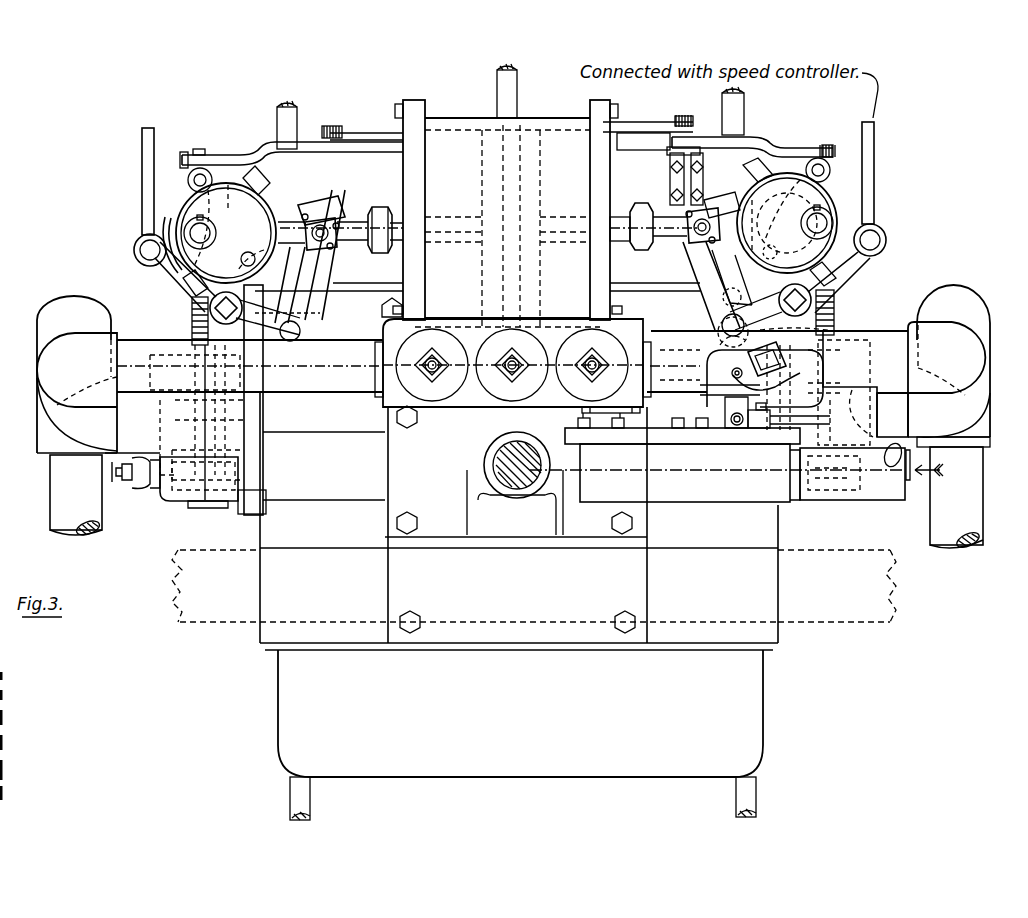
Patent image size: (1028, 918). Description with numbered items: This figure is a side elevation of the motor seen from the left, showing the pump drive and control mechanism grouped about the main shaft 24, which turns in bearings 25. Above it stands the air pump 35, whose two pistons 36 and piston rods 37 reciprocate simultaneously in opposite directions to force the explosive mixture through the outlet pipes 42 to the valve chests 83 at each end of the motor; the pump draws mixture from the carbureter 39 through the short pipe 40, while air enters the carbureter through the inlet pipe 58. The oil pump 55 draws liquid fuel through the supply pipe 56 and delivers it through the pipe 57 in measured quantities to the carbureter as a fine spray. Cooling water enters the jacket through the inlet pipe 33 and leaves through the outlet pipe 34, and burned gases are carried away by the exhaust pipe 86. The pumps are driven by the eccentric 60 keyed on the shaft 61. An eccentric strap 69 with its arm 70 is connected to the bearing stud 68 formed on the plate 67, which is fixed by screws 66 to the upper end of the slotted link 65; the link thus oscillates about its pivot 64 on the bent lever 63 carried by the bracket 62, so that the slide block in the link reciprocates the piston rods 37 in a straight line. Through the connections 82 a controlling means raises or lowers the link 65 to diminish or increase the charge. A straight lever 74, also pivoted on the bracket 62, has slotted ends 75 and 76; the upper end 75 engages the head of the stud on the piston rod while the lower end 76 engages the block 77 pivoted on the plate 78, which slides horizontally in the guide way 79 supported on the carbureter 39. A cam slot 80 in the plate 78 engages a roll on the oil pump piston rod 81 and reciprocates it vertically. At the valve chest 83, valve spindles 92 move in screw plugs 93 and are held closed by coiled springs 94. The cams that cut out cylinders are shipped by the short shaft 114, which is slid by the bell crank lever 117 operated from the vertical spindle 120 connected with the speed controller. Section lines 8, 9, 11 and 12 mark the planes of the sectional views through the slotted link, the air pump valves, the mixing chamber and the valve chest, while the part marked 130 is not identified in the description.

The section line 8 is at (531, 230).
The section line 9 is at (383, 366).
The section line 11 is at (808, 504).
The section line 12 is at (206, 518).
The main shaft 24 is at (500, 452).
The bearings 25 is at (482, 470).
The inlet pipe 33 is at (300, 803).
The outlet pipe 34 is at (293, 118).
The air pump 35 is at (546, 118).
The pistons 36 is at (484, 166).
The piston rods 37 is at (462, 240).
The carbureter 39 is at (685, 502).
The short pipe 40 is at (590, 416).
The outlet pipe 42 is at (42, 330).
The oil pump 55 is at (738, 418).
The supply pipe 56 is at (822, 395).
The pipe 57 is at (752, 432).
The inlet pipe 58 is at (878, 470).
The eccentric 60 is at (258, 210).
The shaft 61 is at (208, 236).
The bracket 62 is at (268, 298).
The bent lever 63 is at (172, 268).
The pivotal end 64 is at (722, 328).
The slotted link 65 is at (375, 250).
The screws 66 is at (672, 220).
The plate 67 is at (322, 210).
The bearing stud 68 is at (342, 216).
The eccentric strap 69 is at (170, 214).
The arm 70 is at (762, 168).
The straight lever 74 is at (778, 255).
The upper slotted end 75 is at (752, 225).
The lower slotted end 76 is at (717, 299).
The block 77 is at (812, 330).
The plate 78 is at (800, 373).
The guide way 79 is at (676, 432).
The cam slot 80 is at (728, 376).
The piston rod 81 is at (662, 388).
The connections 82 is at (150, 152).
The valve chest 83 is at (173, 502).
The exhaust pipe 86 is at (55, 502).
The valve spindles 92 is at (210, 425).
The screw plugs 93 is at (190, 362).
The coiled springs 94 is at (192, 312).
The short shaft 114 is at (196, 178).
The bell crank lever 117 is at (250, 157).
The vertical spindle 120 is at (515, 88).
The valve handle 130 is at (143, 478).